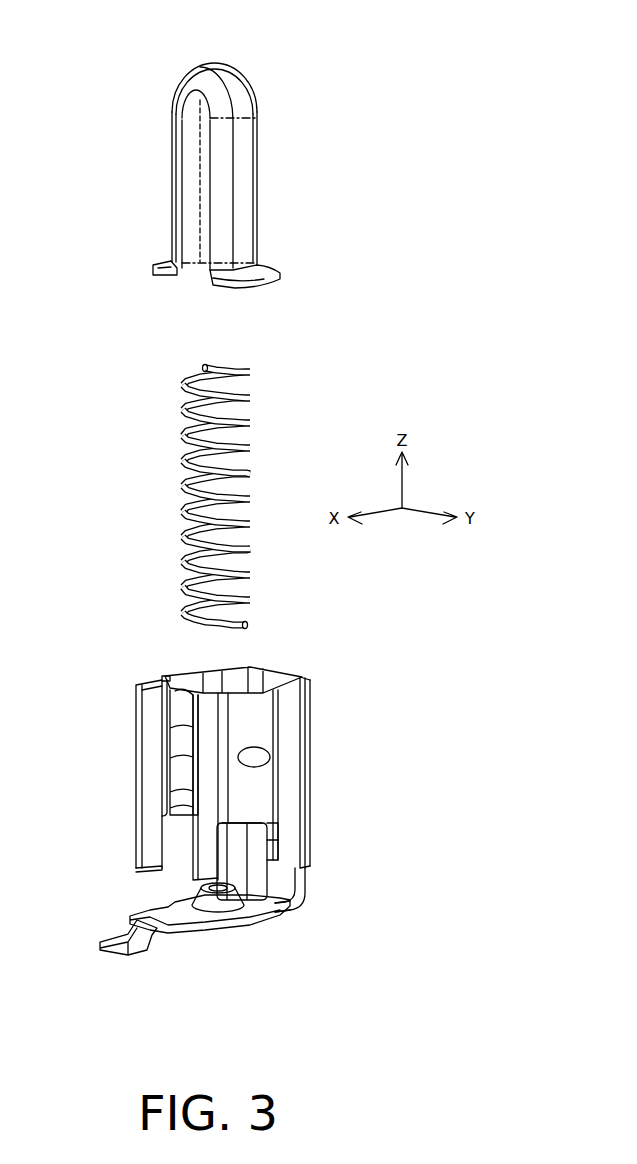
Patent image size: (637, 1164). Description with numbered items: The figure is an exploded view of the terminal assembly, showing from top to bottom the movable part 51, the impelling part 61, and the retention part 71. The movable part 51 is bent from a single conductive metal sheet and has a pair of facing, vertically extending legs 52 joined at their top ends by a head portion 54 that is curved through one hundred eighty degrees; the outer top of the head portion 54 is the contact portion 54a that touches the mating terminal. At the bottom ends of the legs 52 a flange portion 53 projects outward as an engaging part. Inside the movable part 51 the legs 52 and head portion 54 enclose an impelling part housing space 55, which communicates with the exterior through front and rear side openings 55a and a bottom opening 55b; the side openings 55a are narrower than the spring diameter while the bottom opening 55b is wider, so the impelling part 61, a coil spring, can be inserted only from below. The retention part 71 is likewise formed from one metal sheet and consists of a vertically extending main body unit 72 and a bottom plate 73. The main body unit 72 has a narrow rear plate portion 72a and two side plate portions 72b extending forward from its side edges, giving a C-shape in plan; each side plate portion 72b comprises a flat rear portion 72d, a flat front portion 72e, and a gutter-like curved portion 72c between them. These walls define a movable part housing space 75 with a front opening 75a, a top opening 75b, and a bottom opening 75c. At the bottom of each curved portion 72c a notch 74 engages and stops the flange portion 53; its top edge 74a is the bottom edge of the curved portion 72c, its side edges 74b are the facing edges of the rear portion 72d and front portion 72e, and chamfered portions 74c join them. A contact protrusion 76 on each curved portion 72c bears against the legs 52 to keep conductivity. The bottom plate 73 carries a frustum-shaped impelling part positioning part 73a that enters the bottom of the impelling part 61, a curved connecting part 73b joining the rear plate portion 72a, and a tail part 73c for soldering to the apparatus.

The movable part 51 is at (258, 192).
The legs 52 is at (248, 157).
The flange portion 53 is at (273, 270).
The head portion 54 is at (243, 100).
The contact portion 54a is at (214, 62).
The impelling part housing space 55 is at (190, 183).
The side openings 55a is at (182, 143).
The bottom opening 55b is at (190, 277).
The impelling part 61 is at (248, 392).
The retention part 71 is at (310, 810).
The main body unit 72 is at (308, 683).
The rear plate portion 72a is at (280, 670).
The side plate portions 72b is at (298, 708).
The curved portion 72c is at (290, 792).
The rear portion 72d is at (310, 807).
The front portion 72e is at (150, 735).
The bottom plate 73 is at (192, 928).
The impelling part positioning part 73a is at (225, 905).
The connecting part 73b is at (308, 908).
The tail part 73c is at (135, 955).
The notch 74 is at (175, 835).
The top edge 74a is at (265, 837).
The side edges 74b is at (280, 870).
The chamfered portion 74c is at (277, 823).
The movable part housing space 75 is at (237, 680).
The front opening 75a is at (138, 705).
The top opening 75b is at (178, 678).
The bottom opening 75c is at (150, 873).
The contact protrusion 76 is at (268, 753).